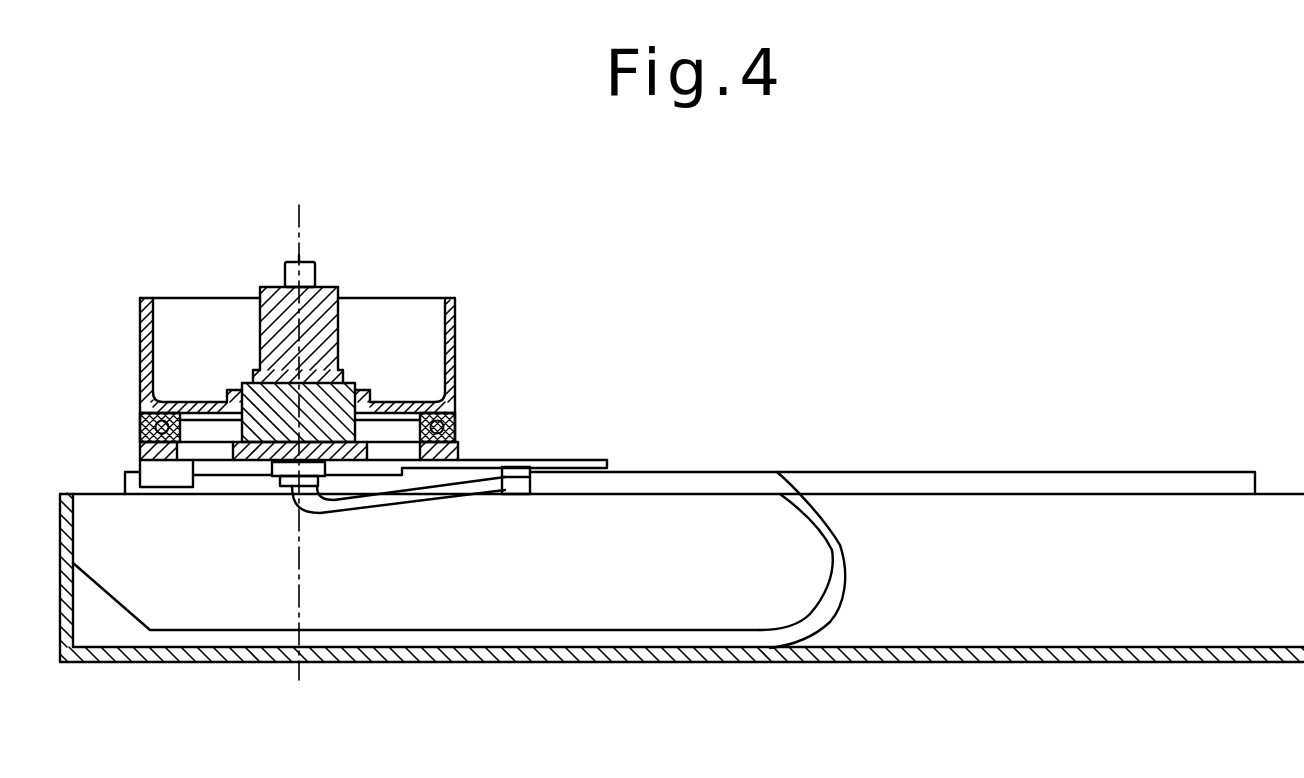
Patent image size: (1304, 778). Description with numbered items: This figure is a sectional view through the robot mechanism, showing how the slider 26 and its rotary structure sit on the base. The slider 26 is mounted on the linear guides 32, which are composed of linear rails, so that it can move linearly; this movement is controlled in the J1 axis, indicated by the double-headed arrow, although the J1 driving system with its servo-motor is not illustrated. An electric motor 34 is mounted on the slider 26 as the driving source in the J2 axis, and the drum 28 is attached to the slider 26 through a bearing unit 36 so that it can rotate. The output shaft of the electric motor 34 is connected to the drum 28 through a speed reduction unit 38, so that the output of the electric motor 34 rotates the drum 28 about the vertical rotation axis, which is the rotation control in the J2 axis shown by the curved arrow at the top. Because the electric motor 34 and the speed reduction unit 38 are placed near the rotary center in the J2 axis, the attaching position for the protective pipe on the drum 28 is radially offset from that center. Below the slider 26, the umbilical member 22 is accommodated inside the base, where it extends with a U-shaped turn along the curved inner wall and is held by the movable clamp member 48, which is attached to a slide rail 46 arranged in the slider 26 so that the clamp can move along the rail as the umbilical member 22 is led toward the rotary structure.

The umbilical member 22 is at (838, 534).
The slider 26 is at (460, 456).
The drum 28 is at (457, 320).
The linear guide 32 is at (1027, 466).
The electric motor 34 is at (338, 332).
The bearing unit 36 is at (455, 427).
The speed reduction unit 38 is at (362, 392).
The slide rail 46 is at (588, 460).
The movable clamp member 48 is at (517, 494).
The J1 axis J1 is at (358, 515).
The J2 axis J2 is at (274, 195).